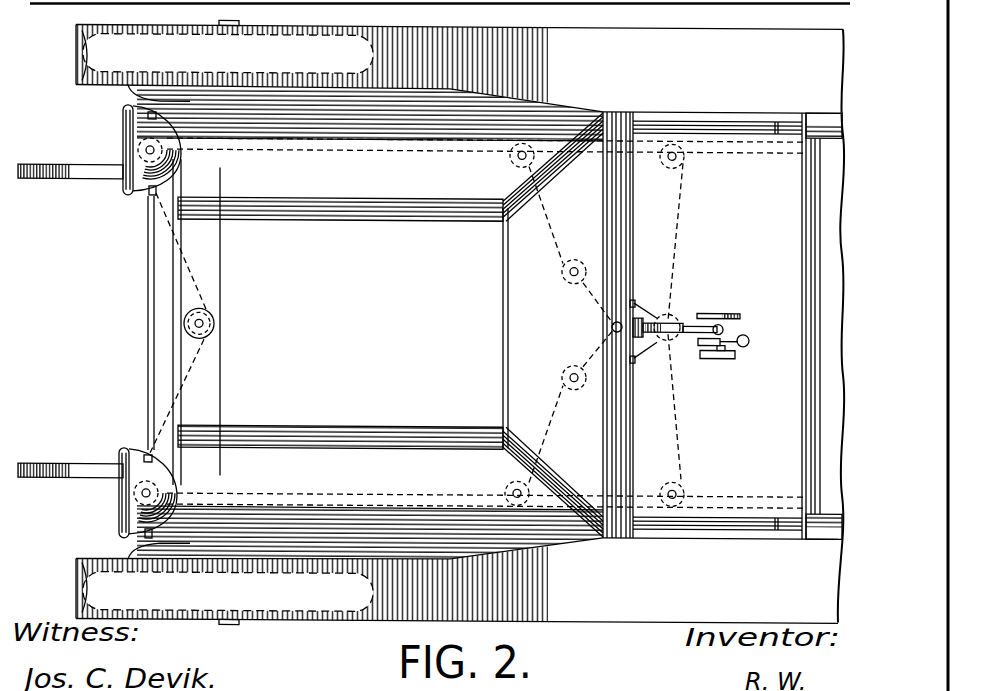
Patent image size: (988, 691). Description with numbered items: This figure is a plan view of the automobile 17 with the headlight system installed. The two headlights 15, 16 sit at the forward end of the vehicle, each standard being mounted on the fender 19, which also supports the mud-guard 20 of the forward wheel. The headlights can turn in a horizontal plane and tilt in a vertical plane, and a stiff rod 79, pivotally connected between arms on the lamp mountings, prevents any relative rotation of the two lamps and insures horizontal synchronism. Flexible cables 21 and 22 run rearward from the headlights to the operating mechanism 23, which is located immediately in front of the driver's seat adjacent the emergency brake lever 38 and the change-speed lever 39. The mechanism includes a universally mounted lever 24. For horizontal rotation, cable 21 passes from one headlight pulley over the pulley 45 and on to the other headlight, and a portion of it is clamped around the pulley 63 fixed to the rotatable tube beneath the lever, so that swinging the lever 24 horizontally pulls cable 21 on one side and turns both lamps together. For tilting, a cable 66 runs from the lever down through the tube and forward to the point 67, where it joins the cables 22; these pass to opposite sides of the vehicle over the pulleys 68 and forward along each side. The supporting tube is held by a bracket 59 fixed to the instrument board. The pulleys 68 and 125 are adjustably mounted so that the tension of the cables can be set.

The headlight 15 is at (133, 447).
The headlight 16 is at (135, 194).
The automobile 17 is at (343, 322).
The fender 19 is at (134, 96).
The mud-guard 20 is at (80, 565).
The flexible cable 21 is at (305, 150).
The flexible cable 22 is at (266, 140).
The operating mechanism 23 is at (705, 353).
The lever 24 is at (696, 320).
The emergency brake lever 38 is at (713, 309).
The change-speed lever 39 is at (744, 343).
The pulley 45 is at (214, 314).
The bracket 59 is at (644, 346).
The pulley 63 is at (669, 316).
The cable 66 is at (608, 334).
The point 67 is at (612, 321).
The pulley 68 is at (560, 263).
The stiff rod 79 is at (178, 281).
The pulley 125 is at (686, 148).